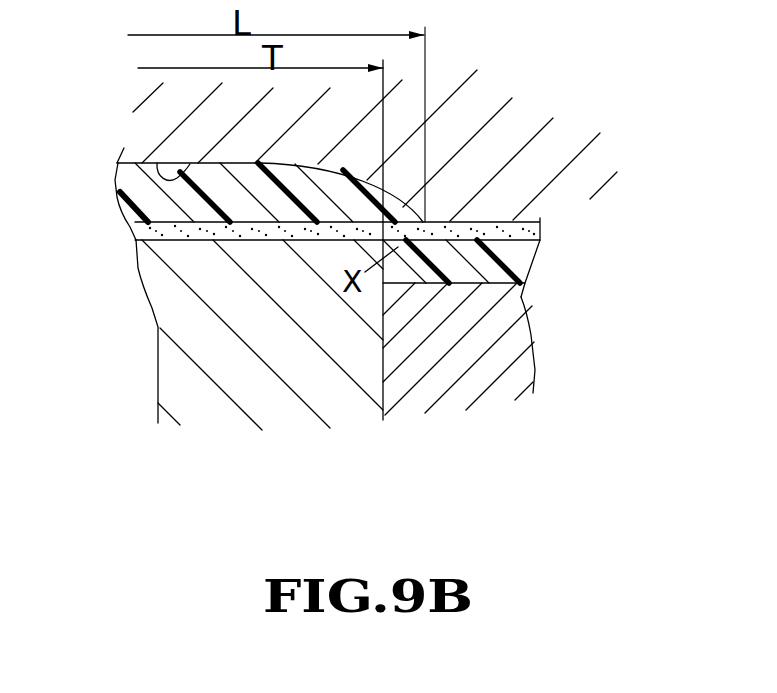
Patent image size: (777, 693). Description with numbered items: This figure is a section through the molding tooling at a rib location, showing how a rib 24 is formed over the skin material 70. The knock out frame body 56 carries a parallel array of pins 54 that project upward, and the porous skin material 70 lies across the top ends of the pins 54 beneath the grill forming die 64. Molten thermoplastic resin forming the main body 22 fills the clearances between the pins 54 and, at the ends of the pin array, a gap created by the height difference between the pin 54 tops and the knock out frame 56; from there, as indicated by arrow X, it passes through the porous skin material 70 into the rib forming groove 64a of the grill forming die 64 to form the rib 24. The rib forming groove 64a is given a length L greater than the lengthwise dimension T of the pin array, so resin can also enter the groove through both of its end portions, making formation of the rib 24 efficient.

The main body 22 is at (518, 255).
The rib 24 is at (140, 187).
The pin 54 is at (277, 332).
The knock out frame body 56 is at (465, 333).
The grill forming die 64 is at (477, 153).
The rib forming groove 64a is at (158, 165).
The skin material 70 is at (543, 222).